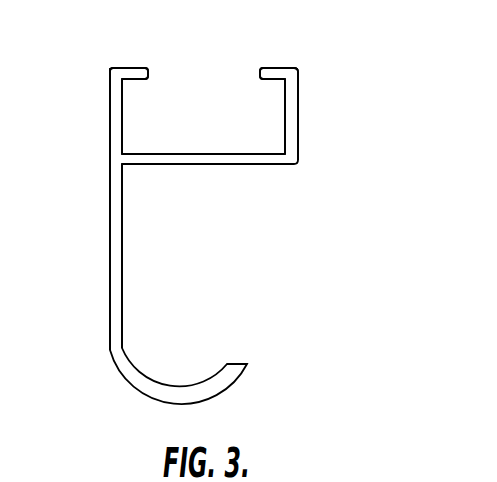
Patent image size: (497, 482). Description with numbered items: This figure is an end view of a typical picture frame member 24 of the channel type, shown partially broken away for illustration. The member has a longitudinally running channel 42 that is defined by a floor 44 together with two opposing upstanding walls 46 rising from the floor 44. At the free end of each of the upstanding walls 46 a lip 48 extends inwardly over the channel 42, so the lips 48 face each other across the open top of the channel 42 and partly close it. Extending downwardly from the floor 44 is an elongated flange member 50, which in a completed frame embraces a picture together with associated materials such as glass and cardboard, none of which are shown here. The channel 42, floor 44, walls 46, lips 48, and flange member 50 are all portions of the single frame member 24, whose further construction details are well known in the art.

The picture frame member 24 is at (301, 194).
The channel 42 is at (216, 107).
The floor 44 is at (203, 163).
The upstanding walls 46 is at (117, 108).
The lips 48 is at (260, 73).
The flange member 50 is at (117, 272).